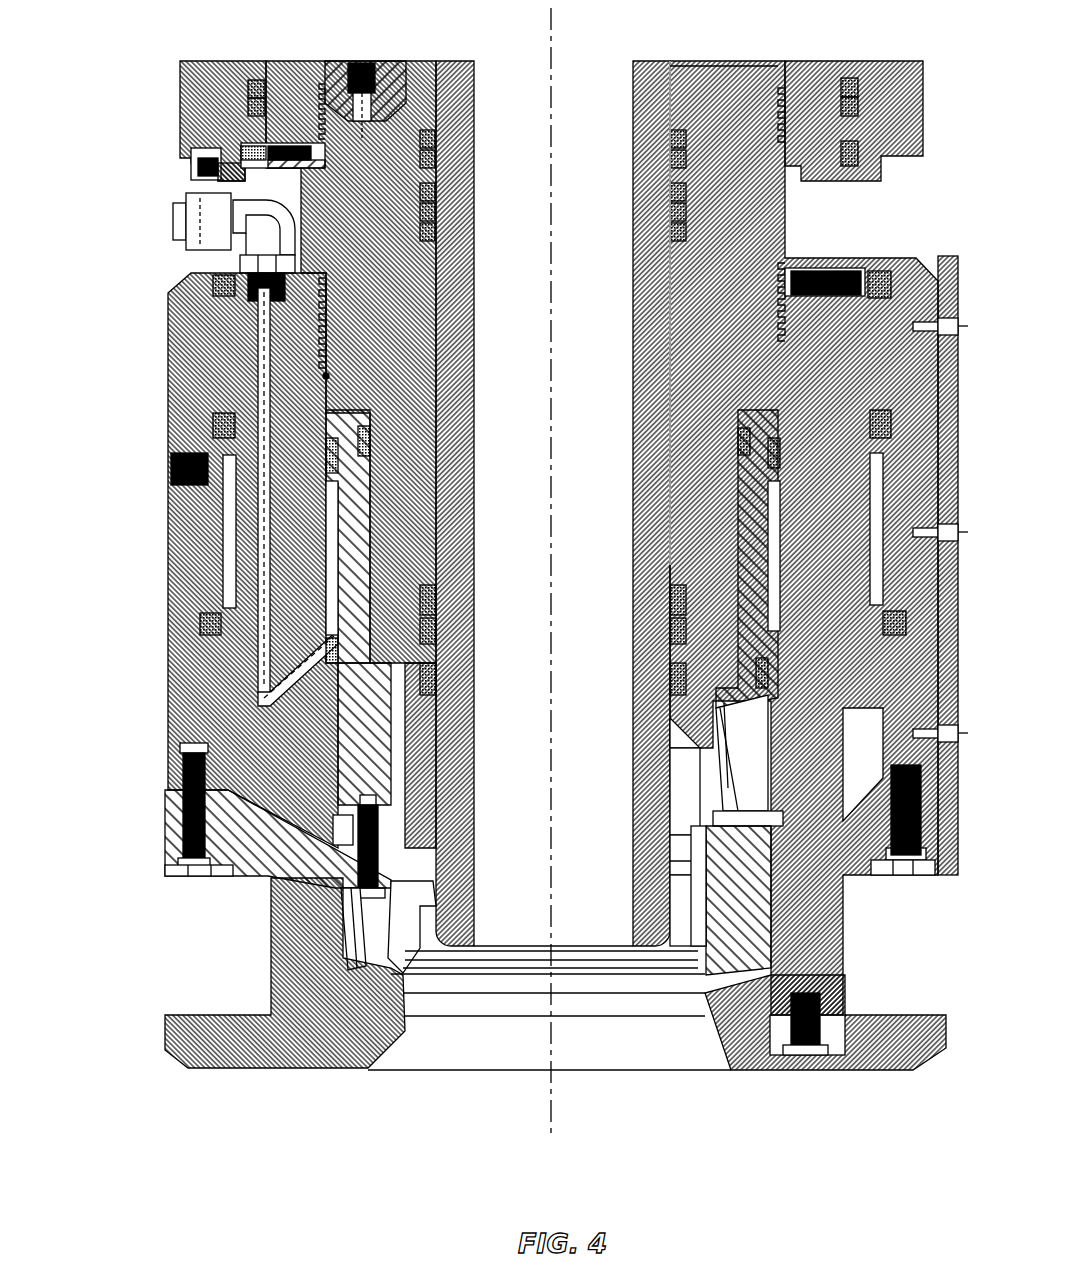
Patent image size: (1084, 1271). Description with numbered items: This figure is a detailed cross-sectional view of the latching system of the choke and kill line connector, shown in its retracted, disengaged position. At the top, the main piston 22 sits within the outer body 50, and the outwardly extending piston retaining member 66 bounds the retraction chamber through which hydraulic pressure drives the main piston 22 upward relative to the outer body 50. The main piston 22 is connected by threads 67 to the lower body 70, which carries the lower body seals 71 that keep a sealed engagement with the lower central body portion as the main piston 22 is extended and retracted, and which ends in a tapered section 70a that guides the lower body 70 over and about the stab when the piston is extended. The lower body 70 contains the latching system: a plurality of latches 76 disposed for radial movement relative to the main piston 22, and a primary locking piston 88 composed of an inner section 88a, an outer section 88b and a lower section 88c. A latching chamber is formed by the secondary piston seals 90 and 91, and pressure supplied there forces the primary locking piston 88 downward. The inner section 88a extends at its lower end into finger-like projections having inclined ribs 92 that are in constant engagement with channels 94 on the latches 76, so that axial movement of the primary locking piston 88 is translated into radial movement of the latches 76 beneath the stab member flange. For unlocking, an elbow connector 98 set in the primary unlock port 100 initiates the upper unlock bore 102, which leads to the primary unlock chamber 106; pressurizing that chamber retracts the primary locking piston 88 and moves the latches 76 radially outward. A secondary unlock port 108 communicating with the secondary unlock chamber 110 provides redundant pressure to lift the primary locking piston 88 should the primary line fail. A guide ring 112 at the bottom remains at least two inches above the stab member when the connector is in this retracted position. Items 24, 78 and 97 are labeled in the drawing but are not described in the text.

The main piston 22 is at (280, 68).
The tubing bore 24 is at (568, 72).
The outer body 50 is at (190, 68).
The piston retaining member 66 is at (245, 133).
The threads 67 is at (205, 270).
The lower body 70 is at (420, 100).
The tapered section 70a is at (413, 712).
The lower body seals 71 is at (427, 203).
The latches 76 is at (398, 905).
The bolt 78 is at (205, 88).
The primary locking piston 88 is at (212, 350).
The inner section of primary locking piston 88a is at (370, 793).
The outer section of primary locking piston 88b is at (190, 432).
The lower section of primary locking piston 88c is at (247, 872).
The secondary piston seal 90 is at (356, 430).
The secondary piston seal 91 is at (322, 365).
The inclined ribs 92 is at (737, 835).
The channels 94 is at (345, 950).
The passage bend 97 is at (258, 668).
The elbow connector 98 is at (237, 195).
The primary unlock port 100 is at (166, 212).
The upper unlock bore 102 is at (256, 410).
The primary unlock chamber 106 is at (324, 500).
The secondary unlock port 108 is at (195, 480).
The secondary unlock chamber 110 is at (221, 517).
The guide ring 112 is at (247, 1017).